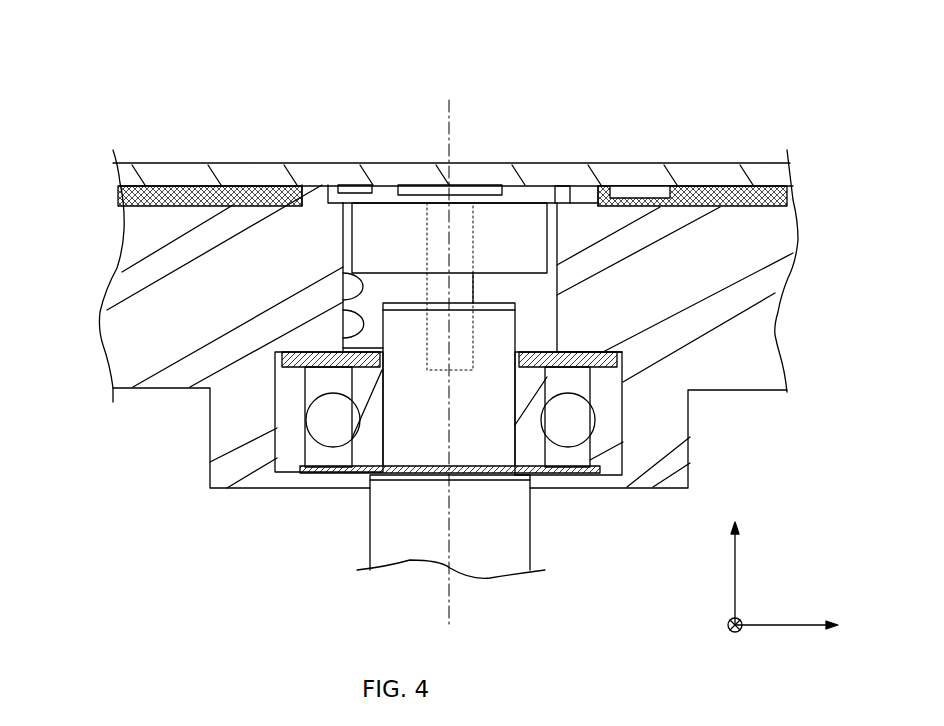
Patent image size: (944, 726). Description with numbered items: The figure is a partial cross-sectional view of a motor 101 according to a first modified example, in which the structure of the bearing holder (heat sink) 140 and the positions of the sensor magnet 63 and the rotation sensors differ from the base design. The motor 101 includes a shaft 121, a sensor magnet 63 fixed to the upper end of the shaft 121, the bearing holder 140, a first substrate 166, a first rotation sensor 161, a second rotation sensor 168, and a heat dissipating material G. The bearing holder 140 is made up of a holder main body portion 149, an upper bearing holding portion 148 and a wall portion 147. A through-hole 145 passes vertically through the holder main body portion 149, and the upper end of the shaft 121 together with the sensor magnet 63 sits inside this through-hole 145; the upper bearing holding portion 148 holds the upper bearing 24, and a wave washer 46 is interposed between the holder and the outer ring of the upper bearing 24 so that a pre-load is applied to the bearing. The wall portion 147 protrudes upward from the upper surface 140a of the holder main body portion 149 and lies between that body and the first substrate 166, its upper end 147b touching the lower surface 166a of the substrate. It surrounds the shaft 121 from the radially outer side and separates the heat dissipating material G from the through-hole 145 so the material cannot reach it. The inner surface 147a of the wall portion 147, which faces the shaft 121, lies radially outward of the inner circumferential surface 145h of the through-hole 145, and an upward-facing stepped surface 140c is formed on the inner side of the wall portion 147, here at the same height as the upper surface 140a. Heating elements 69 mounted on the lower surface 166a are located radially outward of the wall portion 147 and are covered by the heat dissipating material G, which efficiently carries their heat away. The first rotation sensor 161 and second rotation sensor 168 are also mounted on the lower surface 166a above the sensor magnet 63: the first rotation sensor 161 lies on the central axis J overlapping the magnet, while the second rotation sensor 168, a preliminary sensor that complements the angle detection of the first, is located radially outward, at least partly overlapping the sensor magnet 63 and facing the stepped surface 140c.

The motor 101 is at (789, 77).
The heat dissipating material G is at (252, 190).
The stepped surface 140c is at (333, 190).
The second rotation sensor 168 is at (353, 188).
The first rotation sensor 161 is at (480, 190).
The inner surface 147a is at (570, 190).
The wall portion 147 is at (585, 198).
The upper end 147b is at (590, 190).
The heating elements 69 is at (638, 190).
The first substrate 166 is at (713, 168).
The lower surface 166a is at (747, 190).
The upper surface 140a is at (763, 207).
The bearing holder 140 is at (786, 236).
The sensor magnet 63 is at (537, 240).
The inner circumferential surface 145h is at (345, 300).
The through-hole 145 is at (345, 337).
The holder main body portion 149 is at (767, 322).
The wave washer 46 is at (620, 352).
The upper bearing holding portion 148 is at (223, 438).
The upper bearing 24 is at (337, 437).
The shaft 121 is at (520, 522).
The central axis J is at (449, 612).